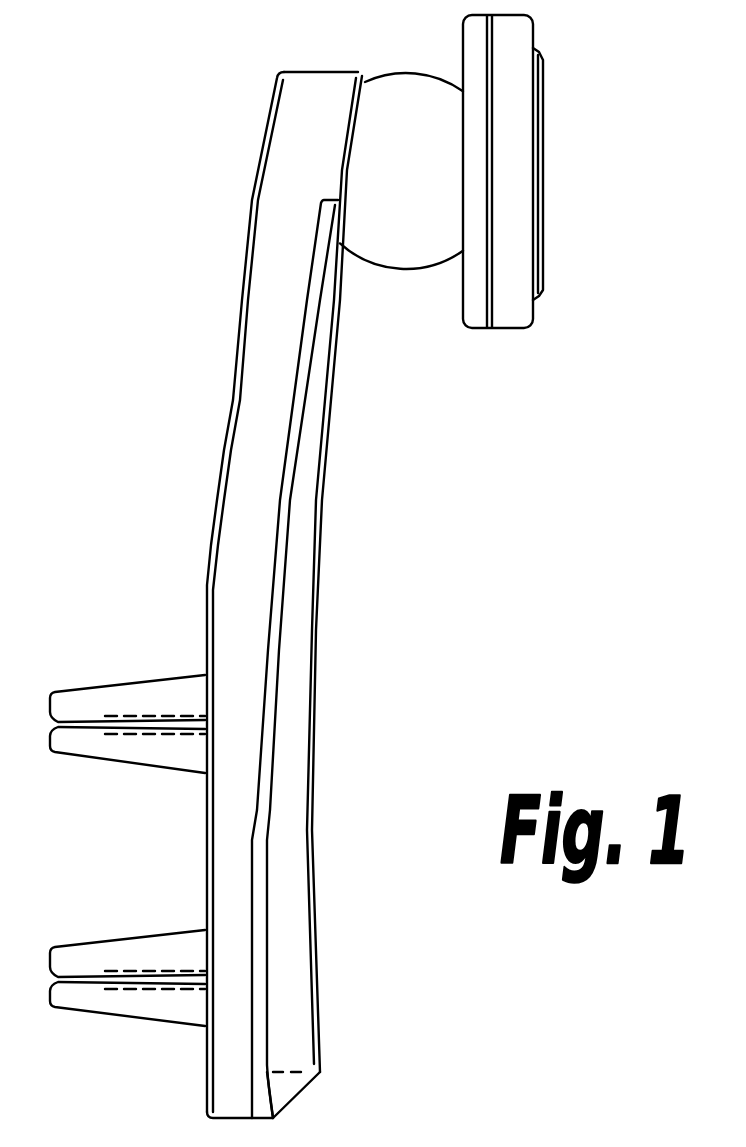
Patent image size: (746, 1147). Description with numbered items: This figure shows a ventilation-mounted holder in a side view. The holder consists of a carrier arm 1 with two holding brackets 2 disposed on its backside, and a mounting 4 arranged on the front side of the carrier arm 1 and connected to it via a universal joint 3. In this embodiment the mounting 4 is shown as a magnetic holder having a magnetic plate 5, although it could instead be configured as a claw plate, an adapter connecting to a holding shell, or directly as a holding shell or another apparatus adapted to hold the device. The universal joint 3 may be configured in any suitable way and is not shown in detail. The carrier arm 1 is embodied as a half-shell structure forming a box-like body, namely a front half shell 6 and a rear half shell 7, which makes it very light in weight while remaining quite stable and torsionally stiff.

The carrier arm 1 is at (248, 433).
The holding brackets 2 is at (100, 702).
The universal joint 3 is at (408, 243).
The mounting 4 is at (513, 223).
The magnetic plate 5 is at (540, 142).
The front half shell 6 is at (298, 575).
The rear half shell 7 is at (215, 511).